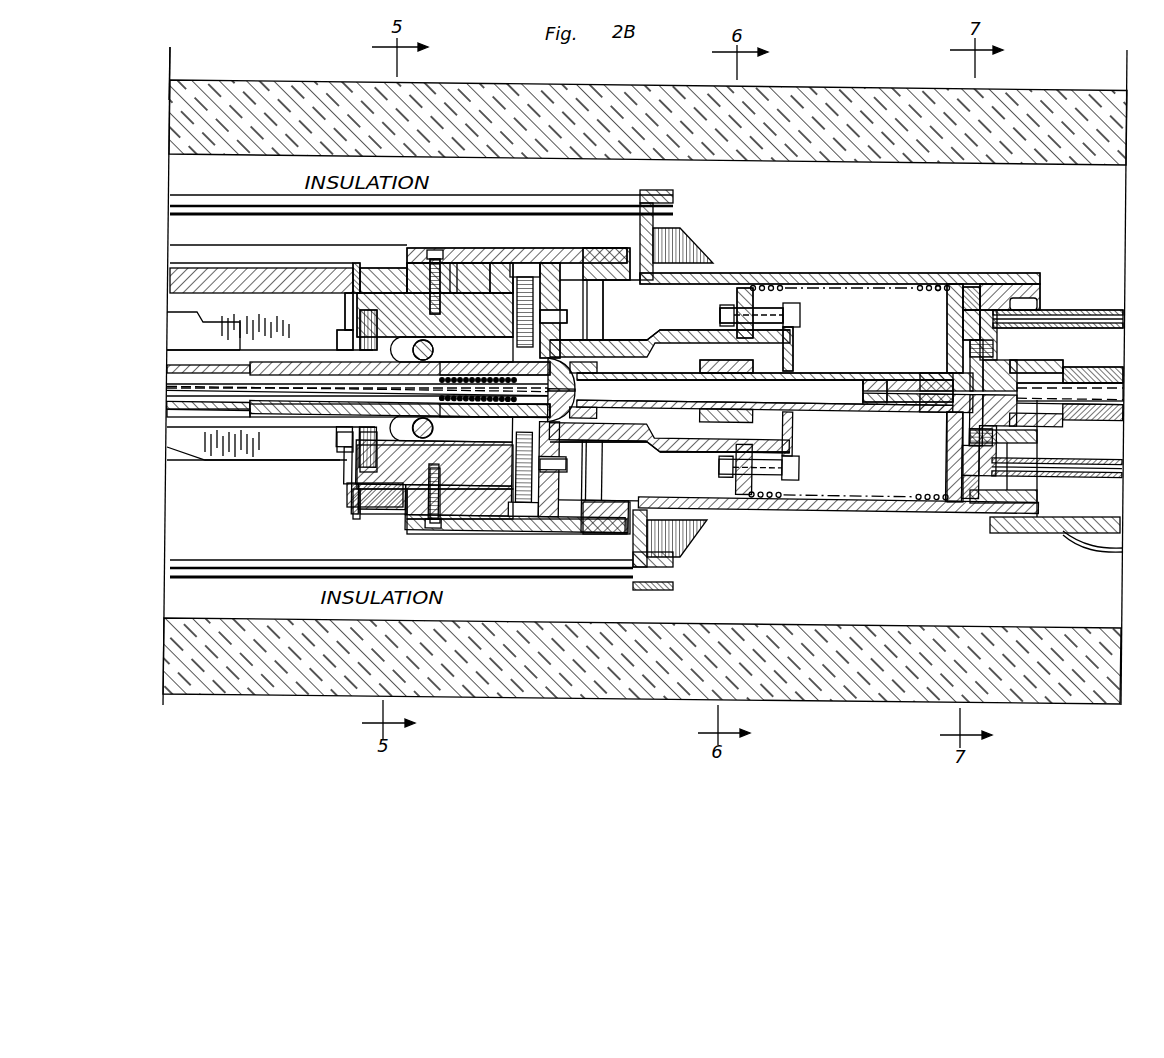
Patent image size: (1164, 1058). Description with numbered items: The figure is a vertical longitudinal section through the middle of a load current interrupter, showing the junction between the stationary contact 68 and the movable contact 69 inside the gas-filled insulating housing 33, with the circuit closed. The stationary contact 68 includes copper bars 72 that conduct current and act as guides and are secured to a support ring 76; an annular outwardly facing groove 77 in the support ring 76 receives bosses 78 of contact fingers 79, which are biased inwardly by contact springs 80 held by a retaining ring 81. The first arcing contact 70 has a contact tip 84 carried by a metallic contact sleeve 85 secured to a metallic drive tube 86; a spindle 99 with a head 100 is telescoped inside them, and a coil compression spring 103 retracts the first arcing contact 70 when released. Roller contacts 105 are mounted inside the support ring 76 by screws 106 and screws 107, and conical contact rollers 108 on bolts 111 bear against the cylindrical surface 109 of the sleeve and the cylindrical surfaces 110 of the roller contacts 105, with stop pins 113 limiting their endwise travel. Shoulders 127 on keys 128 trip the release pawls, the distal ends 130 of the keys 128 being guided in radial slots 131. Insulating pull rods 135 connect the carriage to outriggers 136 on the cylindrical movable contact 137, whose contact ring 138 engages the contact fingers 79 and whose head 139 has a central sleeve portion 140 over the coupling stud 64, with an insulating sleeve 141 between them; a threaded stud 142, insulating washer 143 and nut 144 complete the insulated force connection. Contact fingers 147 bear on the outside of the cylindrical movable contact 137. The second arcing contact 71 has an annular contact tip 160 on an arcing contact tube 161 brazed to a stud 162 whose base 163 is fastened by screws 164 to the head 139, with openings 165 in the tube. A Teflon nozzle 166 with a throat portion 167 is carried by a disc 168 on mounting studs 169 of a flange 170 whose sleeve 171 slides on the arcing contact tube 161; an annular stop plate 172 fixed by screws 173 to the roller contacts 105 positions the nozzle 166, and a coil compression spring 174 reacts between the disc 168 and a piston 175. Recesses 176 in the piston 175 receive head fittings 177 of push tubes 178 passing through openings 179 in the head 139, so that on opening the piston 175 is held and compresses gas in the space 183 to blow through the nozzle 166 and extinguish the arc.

The insulating housing 33 is at (858, 92).
The coupling stud 64 is at (1115, 392).
The stationary contact 68 is at (125, 178).
The movable contact 69 is at (1005, 240).
The first arcing contact 70 is at (243, 338).
The second arcing contact 71 is at (857, 357).
The bars 72 is at (192, 250).
The support ring 76 is at (402, 265).
The annular outwardly facing groove 77 is at (505, 262).
The bosses 78 is at (470, 262).
The contact fingers 79 is at (600, 256).
The contact springs 80 is at (438, 255).
The retaining ring 81 is at (438, 206).
The contact tip 84 is at (605, 443).
The metallic contact sleeve 85 is at (292, 422).
The metallic drive tube 86 is at (215, 435).
The spindle 99 is at (286, 403).
The head 100 is at (500, 418).
The coil compression spring 103 is at (502, 364).
The roller contacts 105 is at (372, 282).
The screws 106 is at (420, 262).
The screws 107 is at (566, 257).
The conical contact rollers 108 is at (433, 352).
The cylindrical surface 109 is at (326, 462).
The cylindrical surfaces 110 is at (366, 335).
The bolts 111 is at (435, 391).
The stop pins 113 is at (338, 342).
The shoulders 127 is at (188, 320).
The keys 128 is at (172, 342).
The distal ends 130 is at (345, 312).
The radial slots 131 is at (353, 275).
The pull rods 135 is at (217, 194).
The outriggers 136 is at (690, 240).
The cylindrical movable contact 137 is at (845, 272).
The contact ring 138 is at (604, 286).
The head 139 is at (1015, 276).
The central sleeve portion 140 is at (1058, 360).
The insulating sleeve 141 is at (1100, 370).
The threaded stud 142 is at (936, 419).
The insulating washer 143 is at (1037, 438).
The nut 144 is at (940, 428).
The contact fingers 147 is at (1040, 534).
The annular contact tip 160 is at (615, 408).
The arcing contact tube 161 is at (660, 338).
The stud 162 is at (896, 372).
The base 163 is at (960, 366).
The screws 164 is at (960, 342).
The openings 165 is at (740, 382).
The nozzle 166 is at (685, 464).
The throat portion 167 is at (622, 342).
The disc 168 is at (722, 445).
The mounting studs 169 is at (800, 315).
The flange 170 is at (795, 340).
The sleeve 171 is at (705, 364).
The annular stop plate 172 is at (561, 310).
The screws 173 is at (570, 316).
The coil compression spring 174 is at (775, 272).
The piston 175 is at (955, 470).
The recesses 176 is at (937, 280).
The head fittings 177 is at (970, 284).
The push tubes 178 is at (1105, 312).
The openings 179 is at (1041, 290).
The space 183 is at (790, 473).